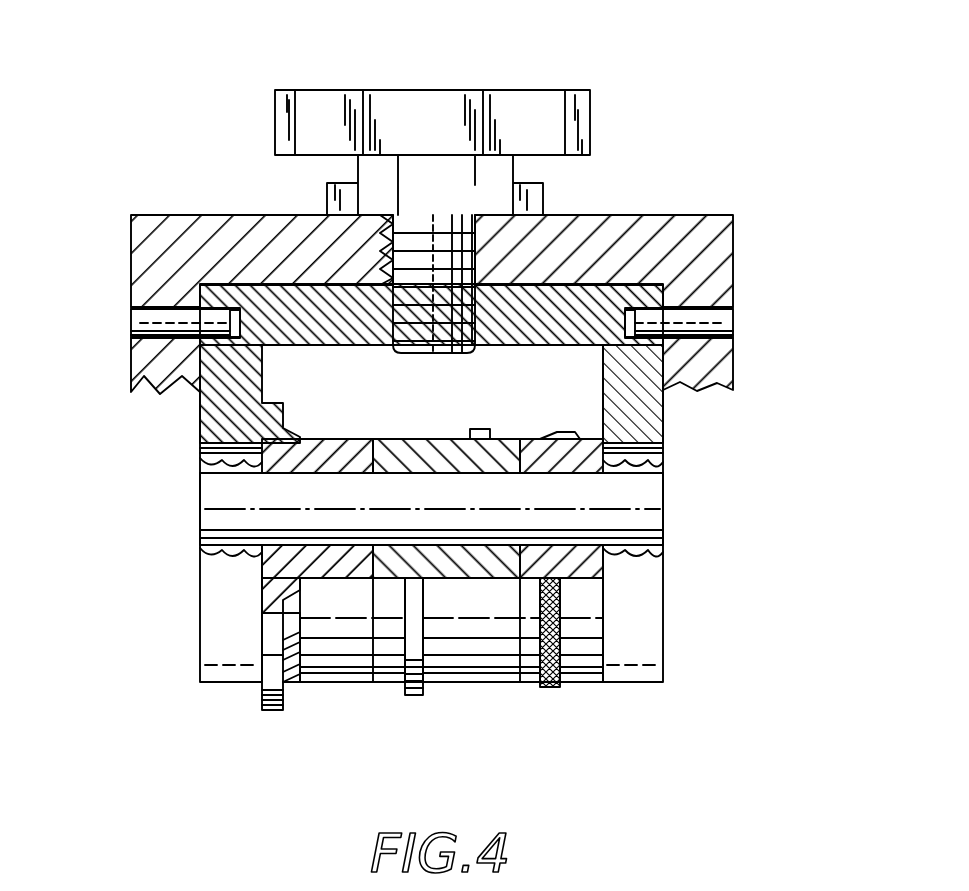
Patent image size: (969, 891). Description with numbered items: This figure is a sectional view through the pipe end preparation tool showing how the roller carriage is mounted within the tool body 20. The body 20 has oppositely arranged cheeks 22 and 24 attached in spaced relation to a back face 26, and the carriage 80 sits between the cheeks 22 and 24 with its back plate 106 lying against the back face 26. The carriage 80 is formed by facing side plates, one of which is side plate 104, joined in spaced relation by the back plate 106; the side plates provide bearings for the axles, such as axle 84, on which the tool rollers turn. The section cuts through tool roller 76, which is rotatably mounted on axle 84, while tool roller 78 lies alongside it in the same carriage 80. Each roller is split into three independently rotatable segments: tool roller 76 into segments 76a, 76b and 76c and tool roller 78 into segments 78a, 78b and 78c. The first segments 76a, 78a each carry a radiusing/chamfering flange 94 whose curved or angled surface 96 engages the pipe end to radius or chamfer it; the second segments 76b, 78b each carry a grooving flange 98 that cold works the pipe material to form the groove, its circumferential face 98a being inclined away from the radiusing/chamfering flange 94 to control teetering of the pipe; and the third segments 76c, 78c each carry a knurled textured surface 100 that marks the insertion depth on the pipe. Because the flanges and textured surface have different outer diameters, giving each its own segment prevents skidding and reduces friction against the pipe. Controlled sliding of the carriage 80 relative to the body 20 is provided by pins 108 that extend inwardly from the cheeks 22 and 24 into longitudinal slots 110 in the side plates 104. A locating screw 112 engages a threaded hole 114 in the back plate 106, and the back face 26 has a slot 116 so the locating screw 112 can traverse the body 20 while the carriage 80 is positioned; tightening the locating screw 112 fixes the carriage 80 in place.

The body 20 is at (728, 240).
The cheek 22 is at (728, 370).
The cheek 24 is at (200, 420).
The back face 26 is at (165, 215).
The tool roller 76 is at (403, 418).
The tool roller segment 76a is at (322, 439).
The tool roller segment 76b is at (448, 440).
The tool roller segment 76c is at (543, 440).
The tool roller 78 is at (610, 690).
The tool roller segment 78a is at (345, 688).
The tool roller segment 78b is at (495, 688).
The tool roller segment 78c is at (582, 690).
The carriage 80 is at (660, 428).
The axle 84 is at (655, 495).
The radiusing/chamfering flange 94 is at (270, 712).
The curved or angled surface 96 is at (290, 690).
The grooving flange 98 is at (415, 697).
The circumferential face 98a is at (430, 665).
The textured surface 100 is at (548, 690).
The side plate 104 is at (210, 592).
The back plate 106 is at (660, 215).
The pin 108 is at (140, 320).
The longitudinal slot 110 is at (140, 368).
The locating screw 112 is at (428, 110).
The threaded hole 114 is at (597, 295).
The slot 116 is at (390, 268).